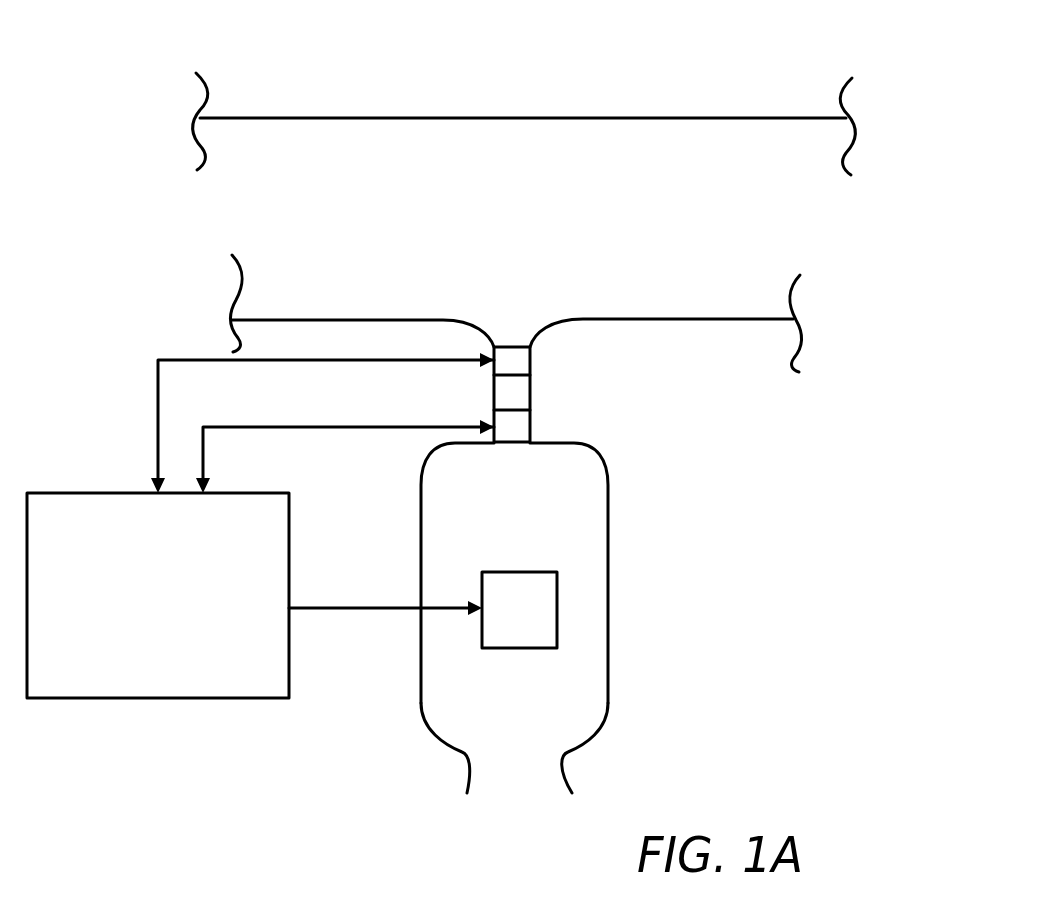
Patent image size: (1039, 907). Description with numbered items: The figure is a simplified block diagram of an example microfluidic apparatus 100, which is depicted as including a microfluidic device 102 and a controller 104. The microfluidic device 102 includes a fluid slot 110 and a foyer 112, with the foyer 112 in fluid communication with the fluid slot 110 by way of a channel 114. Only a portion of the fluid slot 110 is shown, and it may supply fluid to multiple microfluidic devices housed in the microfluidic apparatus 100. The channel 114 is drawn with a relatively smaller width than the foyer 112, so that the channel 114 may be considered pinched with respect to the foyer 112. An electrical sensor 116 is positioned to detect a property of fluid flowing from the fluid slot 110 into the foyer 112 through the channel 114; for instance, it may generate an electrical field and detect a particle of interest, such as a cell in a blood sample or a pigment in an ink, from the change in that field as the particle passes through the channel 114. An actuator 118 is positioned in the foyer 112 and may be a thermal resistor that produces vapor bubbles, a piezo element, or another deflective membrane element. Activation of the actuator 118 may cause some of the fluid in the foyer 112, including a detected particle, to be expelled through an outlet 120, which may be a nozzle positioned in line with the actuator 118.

The microfluidic apparatus 100 is at (372, 72).
The microfluidic device 102 is at (708, 432).
The controller 104 is at (260, 525).
The fluid slot 110 is at (524, 155).
The foyer 112 is at (608, 527).
The channel 114 is at (531, 397).
The electrical sensor 116 is at (488, 308).
The actuator 118 is at (557, 628).
The outlet 120 is at (524, 795).